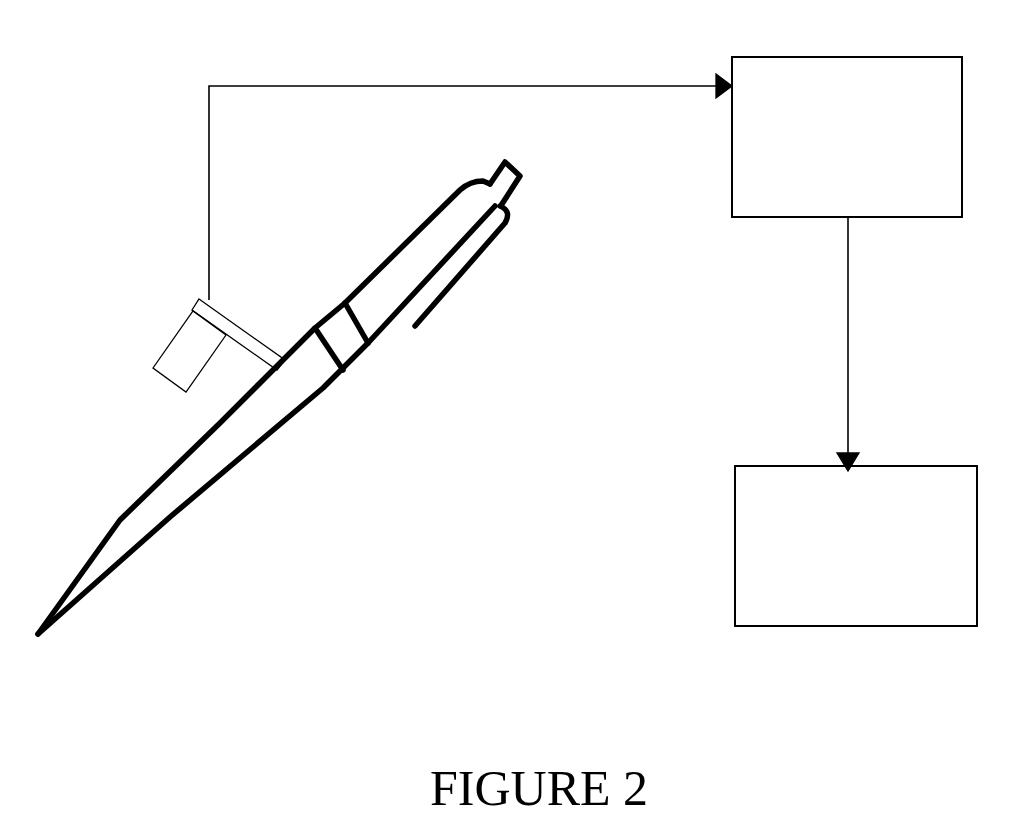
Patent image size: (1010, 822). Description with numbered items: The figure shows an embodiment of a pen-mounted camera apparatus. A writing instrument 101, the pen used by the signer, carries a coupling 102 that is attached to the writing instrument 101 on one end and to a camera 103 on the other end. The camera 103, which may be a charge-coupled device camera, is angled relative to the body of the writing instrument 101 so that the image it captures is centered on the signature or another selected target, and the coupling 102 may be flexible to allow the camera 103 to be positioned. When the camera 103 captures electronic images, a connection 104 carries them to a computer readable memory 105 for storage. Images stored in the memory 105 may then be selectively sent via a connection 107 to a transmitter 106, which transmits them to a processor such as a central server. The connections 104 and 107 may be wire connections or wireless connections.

The writing instrument 101 is at (267, 443).
The coupling 102 is at (268, 335).
The camera 103 is at (170, 342).
The connection 104 is at (208, 148).
The memory 105 is at (784, 218).
The transmitter 106 is at (927, 465).
The connection 107 is at (847, 340).